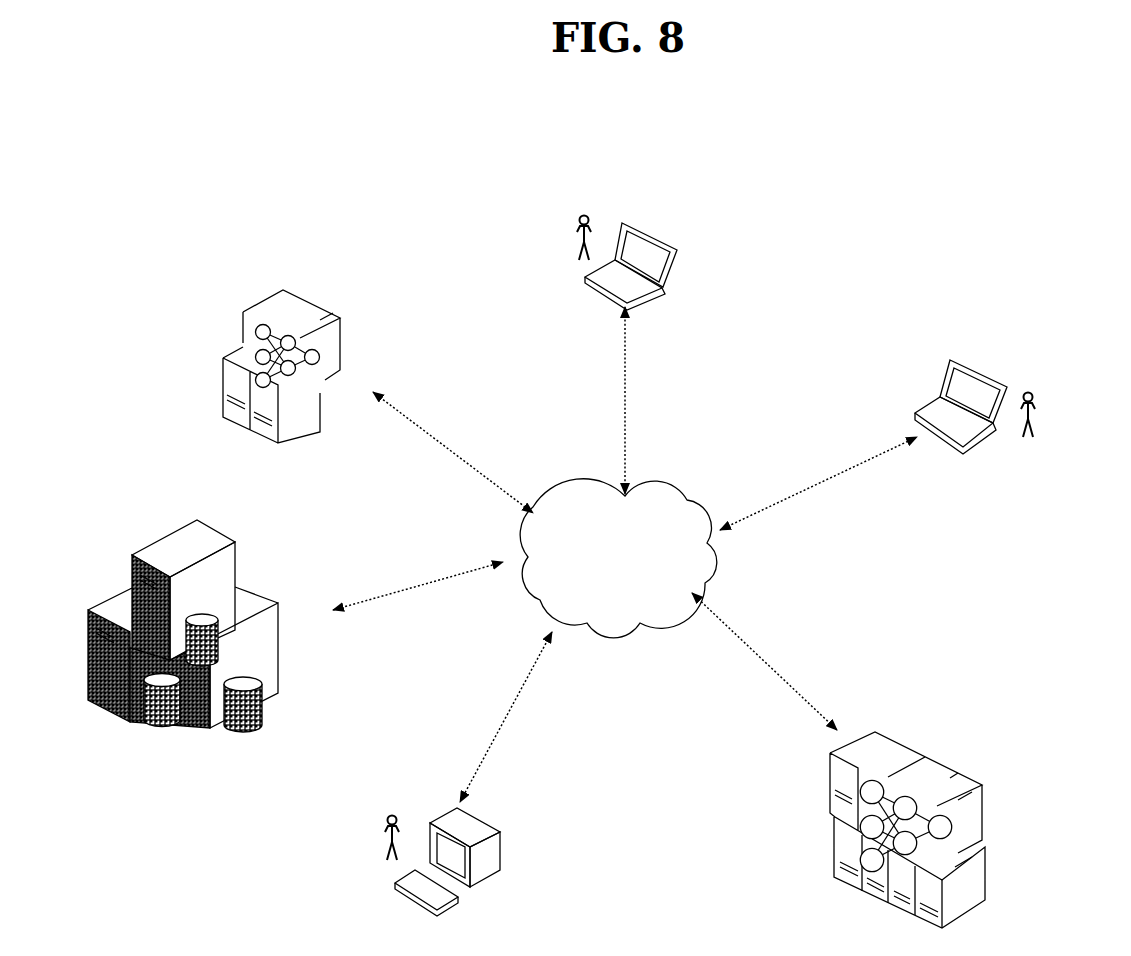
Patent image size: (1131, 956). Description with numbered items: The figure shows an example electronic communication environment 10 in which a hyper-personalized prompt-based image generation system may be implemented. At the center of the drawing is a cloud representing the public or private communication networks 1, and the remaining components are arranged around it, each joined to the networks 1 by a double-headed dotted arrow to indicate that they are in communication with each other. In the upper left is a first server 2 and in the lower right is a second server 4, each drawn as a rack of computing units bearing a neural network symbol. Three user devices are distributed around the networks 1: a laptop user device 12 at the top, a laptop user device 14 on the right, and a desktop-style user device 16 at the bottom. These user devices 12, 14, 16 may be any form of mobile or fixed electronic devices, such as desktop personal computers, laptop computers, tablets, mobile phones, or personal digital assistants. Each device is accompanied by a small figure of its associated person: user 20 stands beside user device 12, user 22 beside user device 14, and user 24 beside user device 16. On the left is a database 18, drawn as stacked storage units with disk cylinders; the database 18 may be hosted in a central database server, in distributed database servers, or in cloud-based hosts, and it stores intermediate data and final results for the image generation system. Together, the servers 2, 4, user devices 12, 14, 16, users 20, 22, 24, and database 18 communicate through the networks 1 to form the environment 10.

The electronic communication environment 10 is at (46, 148).
The communication networks 1 is at (696, 505).
The server 2 is at (350, 320).
The server 4 is at (965, 775).
The user device 12 is at (678, 300).
The user device 14 is at (975, 440).
The user device 16 is at (518, 890).
The database 18 is at (290, 680).
The user 20 is at (591, 205).
The user 22 is at (1036, 390).
The user 24 is at (394, 803).